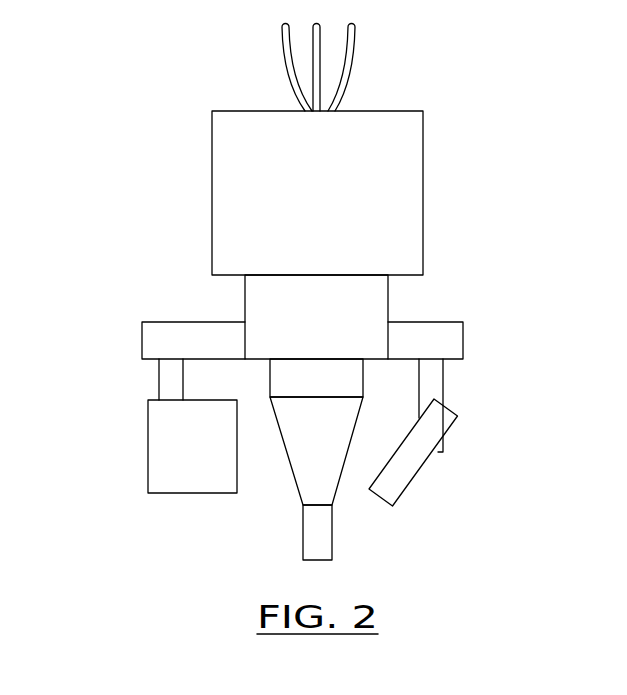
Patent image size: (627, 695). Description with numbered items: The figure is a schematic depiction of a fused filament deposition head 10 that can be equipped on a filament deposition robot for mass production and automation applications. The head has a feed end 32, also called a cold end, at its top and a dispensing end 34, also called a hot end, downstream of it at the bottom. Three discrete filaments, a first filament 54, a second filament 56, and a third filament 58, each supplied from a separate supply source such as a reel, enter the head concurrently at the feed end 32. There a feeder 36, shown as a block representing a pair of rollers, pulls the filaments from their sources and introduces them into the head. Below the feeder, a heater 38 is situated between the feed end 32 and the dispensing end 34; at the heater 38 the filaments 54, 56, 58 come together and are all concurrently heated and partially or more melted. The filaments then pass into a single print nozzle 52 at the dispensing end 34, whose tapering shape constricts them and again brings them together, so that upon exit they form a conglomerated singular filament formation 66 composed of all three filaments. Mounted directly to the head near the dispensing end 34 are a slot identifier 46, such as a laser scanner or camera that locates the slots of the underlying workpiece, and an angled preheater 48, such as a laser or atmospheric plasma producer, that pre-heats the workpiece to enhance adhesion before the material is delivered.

The fused filament deposition head 10 is at (510, 46).
The feed end 32 is at (424, 113).
The dispensing end 34 is at (332, 503).
The feeder 36 is at (393, 182).
The heater 38 is at (389, 300).
The slot identifier 46 is at (148, 443).
The preheater 48 is at (418, 478).
The print nozzle 52 is at (311, 480).
The first filament 54 is at (288, 70).
The second filament 56 is at (313, 52).
The third filament 58 is at (348, 68).
The filament formation 66 is at (313, 542).